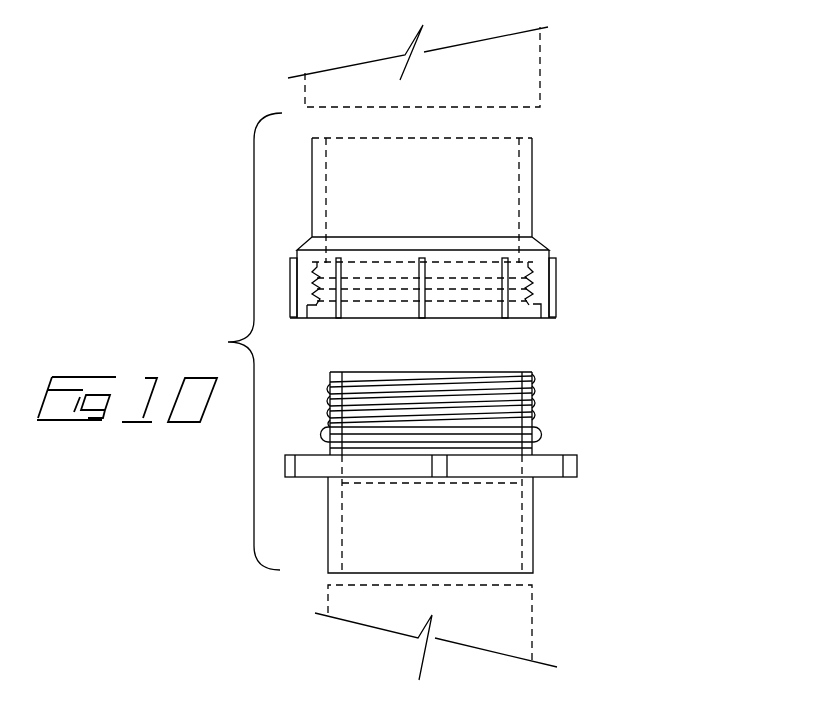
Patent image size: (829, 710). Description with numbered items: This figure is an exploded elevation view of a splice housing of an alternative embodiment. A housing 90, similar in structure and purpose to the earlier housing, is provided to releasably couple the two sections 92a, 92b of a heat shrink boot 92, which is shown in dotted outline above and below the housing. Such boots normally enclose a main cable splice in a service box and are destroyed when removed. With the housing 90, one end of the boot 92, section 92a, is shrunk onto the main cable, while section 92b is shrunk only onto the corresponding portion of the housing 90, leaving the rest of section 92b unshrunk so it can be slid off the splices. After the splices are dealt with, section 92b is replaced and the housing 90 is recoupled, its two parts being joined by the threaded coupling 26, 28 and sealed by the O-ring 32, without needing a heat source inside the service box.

The heat shrink boot 92 is at (472, 352).
The section of heat shrink boot 92a is at (507, 97).
The section of heat shrink boot 92b is at (518, 641).
The housing 90 is at (479, 355).
The threaded coupling 28 is at (532, 280).
The threaded coupling 26 is at (537, 390).
The O-ring 32 is at (537, 432).